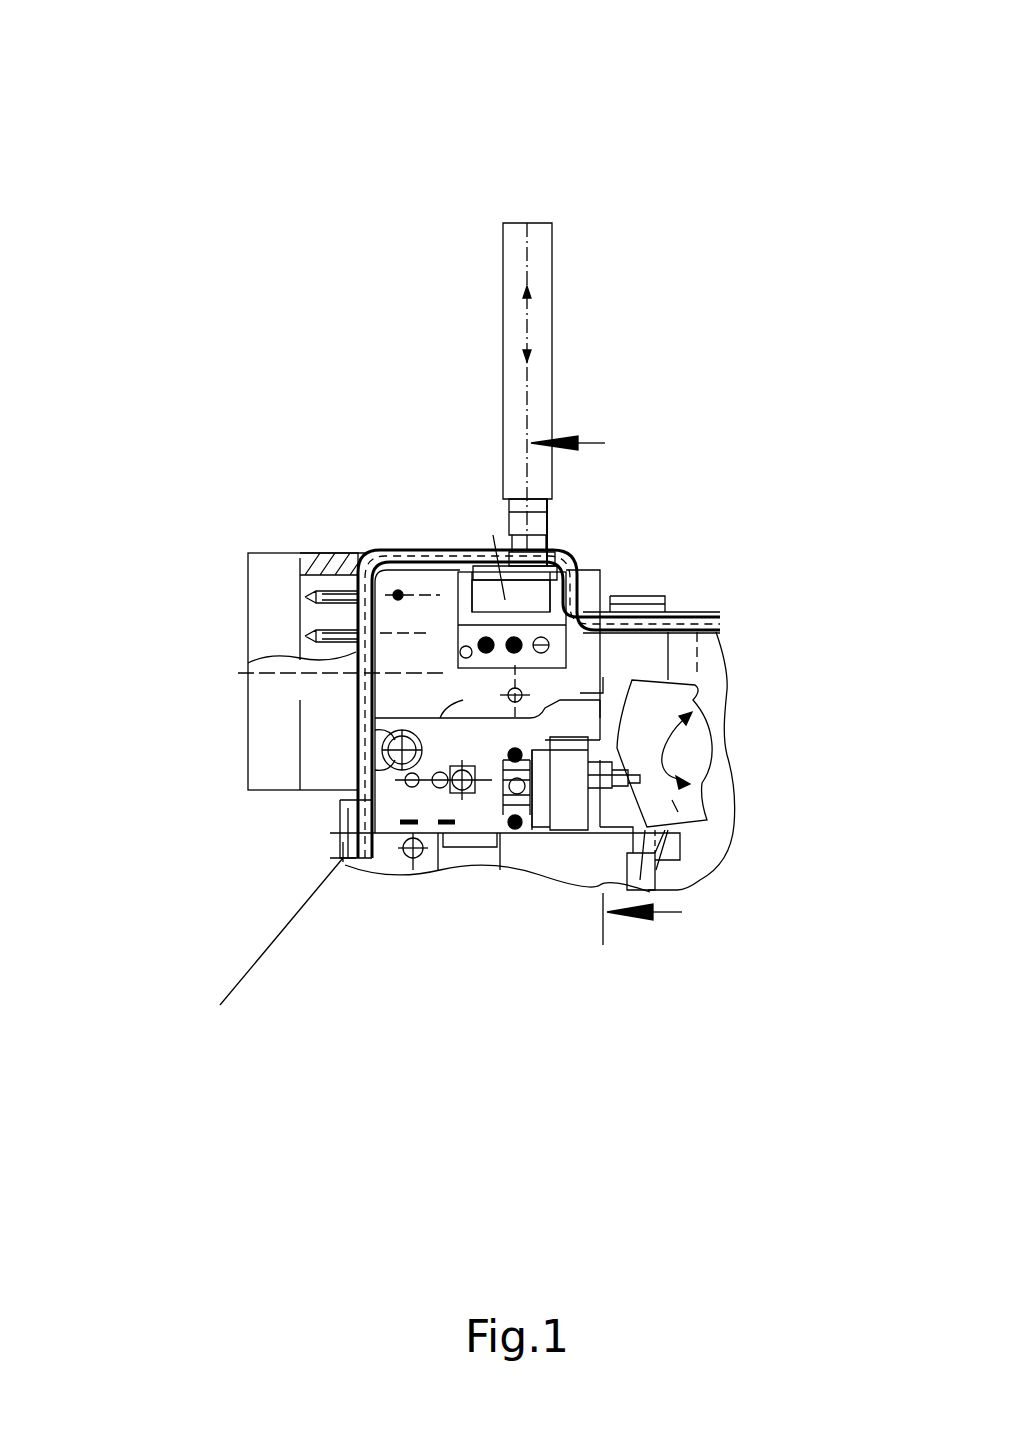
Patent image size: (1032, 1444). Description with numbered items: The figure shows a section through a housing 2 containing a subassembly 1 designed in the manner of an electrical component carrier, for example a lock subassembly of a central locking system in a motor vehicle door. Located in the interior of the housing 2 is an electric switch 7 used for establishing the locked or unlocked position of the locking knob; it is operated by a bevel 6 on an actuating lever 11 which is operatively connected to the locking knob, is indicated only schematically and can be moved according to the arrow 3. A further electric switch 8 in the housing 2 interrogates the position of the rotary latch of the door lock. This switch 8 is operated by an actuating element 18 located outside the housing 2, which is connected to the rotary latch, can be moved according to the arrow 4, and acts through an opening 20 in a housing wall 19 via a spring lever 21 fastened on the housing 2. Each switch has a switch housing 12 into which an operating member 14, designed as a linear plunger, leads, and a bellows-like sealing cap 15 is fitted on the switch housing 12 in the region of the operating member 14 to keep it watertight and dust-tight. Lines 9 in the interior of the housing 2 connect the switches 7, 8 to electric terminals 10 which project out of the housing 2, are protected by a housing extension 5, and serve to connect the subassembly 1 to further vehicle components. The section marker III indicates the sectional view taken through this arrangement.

The subassembly 1 is at (722, 590).
The housing 2 is at (434, 726).
The arrow 3 is at (663, 747).
The arrow 4 is at (526, 313).
The housing extension 5 is at (248, 554).
The bevel 6 is at (617, 790).
The electric switch 7 is at (578, 760).
The electric switch 8 is at (500, 600).
The lines 9 is at (552, 735).
The electric terminals 10 is at (306, 636).
The actuating lever 11 is at (677, 835).
The switch housing 12 is at (445, 550).
The operating member 14 is at (504, 497).
The sealing cap 15 is at (603, 745).
The actuating element 18 is at (523, 248).
The housing wall 19 is at (495, 585).
The opening 20 is at (553, 533).
The spring lever 21 is at (510, 535).
The section line III- III is at (430, 556).